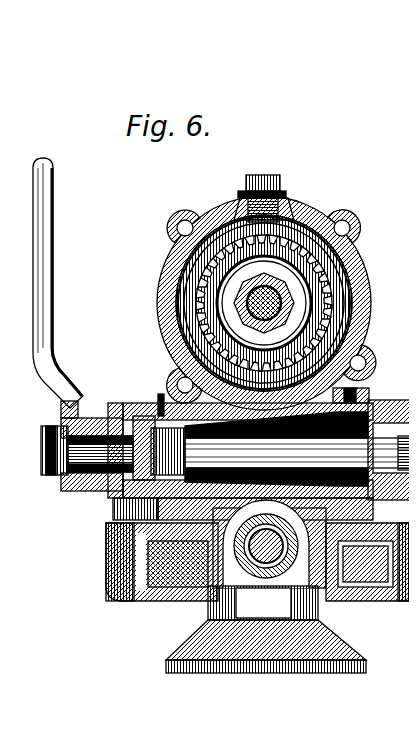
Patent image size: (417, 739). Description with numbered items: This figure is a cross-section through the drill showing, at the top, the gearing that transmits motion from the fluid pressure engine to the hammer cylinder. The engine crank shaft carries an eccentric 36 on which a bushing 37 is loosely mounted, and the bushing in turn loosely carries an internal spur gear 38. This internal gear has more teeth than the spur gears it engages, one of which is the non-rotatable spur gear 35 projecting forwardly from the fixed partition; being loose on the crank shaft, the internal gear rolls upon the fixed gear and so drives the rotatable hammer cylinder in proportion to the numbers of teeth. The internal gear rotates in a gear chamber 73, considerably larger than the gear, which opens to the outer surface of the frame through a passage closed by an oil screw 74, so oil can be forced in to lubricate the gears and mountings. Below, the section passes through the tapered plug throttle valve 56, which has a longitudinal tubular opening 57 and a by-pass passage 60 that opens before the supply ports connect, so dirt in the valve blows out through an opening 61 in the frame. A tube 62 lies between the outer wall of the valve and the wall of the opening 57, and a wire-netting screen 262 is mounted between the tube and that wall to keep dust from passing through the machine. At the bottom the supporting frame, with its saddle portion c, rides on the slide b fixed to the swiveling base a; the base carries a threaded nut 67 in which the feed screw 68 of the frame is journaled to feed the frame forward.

The internal spur gear 38 is at (218, 222).
The oil screw 74 is at (273, 178).
The non-rotatable spur gear 35 is at (302, 270).
The gear chamber 73 is at (264, 316).
The bushing 37 is at (236, 290).
The eccentric 36 is at (285, 296).
The opening in the frame 61 is at (153, 388).
The screen 262 is at (146, 400).
The tapered plug throttle valve 56 is at (138, 480).
The tube 62 is at (366, 398).
The by-pass passage 60 is at (168, 451).
The longitudinal tubular opening 57 is at (297, 449).
The saddle portion c is at (100, 527).
The slide b is at (132, 556).
The threaded nut 67 is at (272, 570).
The feed screw 68 is at (262, 522).
The swiveling base a is at (266, 660).